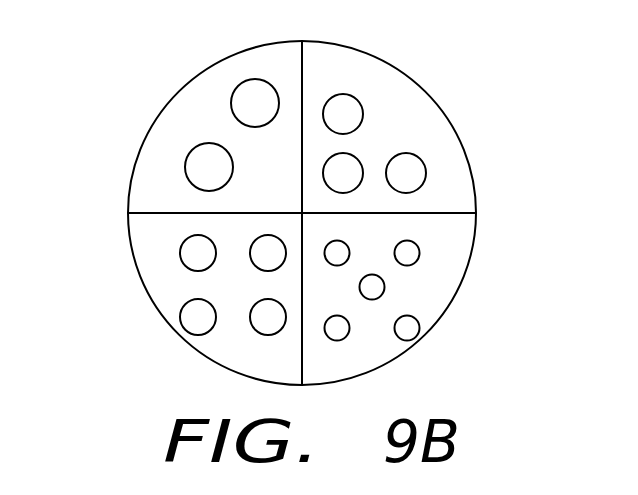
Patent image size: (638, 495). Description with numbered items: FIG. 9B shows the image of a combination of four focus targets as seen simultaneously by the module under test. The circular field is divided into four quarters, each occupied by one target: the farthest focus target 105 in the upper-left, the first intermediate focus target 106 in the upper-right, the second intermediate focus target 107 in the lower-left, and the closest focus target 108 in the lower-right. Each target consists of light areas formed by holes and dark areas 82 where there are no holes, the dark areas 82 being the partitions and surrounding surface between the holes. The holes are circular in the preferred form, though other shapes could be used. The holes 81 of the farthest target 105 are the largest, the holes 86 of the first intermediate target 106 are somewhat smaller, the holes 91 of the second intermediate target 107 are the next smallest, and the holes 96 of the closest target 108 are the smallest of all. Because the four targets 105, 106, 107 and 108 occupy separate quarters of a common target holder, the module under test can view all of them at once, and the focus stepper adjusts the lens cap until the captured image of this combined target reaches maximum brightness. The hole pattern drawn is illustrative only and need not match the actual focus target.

The holes 81 is at (255, 103).
The dark areas 82 is at (138, 190).
The holes 86 is at (343, 115).
The holes 91 is at (198, 317).
The holes 96 is at (407, 328).
The farthest focus target 105 is at (177, 127).
The first intermediate focus target 106 is at (421, 120).
The second intermediate focus target 107 is at (183, 300).
The closest focus target 108 is at (421, 299).